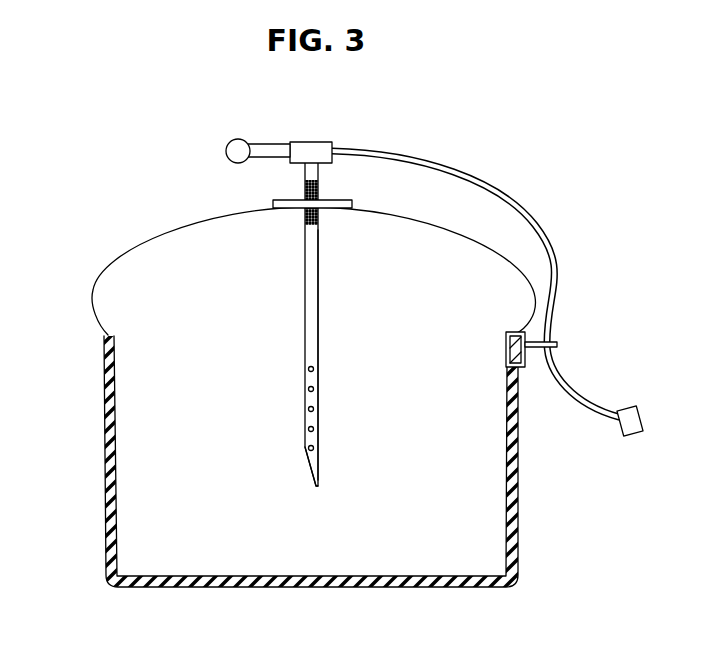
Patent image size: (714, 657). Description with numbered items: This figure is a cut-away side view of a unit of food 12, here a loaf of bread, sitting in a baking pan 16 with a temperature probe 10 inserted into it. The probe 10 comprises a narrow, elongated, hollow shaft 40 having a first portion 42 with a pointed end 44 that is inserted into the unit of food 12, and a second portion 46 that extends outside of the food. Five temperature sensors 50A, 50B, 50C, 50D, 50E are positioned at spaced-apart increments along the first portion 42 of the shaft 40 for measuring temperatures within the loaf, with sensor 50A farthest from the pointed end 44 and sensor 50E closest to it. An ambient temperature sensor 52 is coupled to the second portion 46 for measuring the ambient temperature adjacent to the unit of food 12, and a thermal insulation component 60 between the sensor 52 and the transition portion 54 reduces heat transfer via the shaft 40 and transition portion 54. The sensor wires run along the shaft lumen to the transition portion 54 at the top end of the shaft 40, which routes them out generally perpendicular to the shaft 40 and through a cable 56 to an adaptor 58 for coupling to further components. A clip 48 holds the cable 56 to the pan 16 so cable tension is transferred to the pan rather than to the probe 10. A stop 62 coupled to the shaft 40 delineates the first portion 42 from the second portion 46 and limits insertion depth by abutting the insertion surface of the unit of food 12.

The temperature probe 10 is at (247, 108).
The unit of food 12 is at (103, 270).
The baking pan 16 is at (102, 390).
The shaft 40 is at (313, 284).
The first portion 42 is at (320, 356).
The pointed end 44 is at (317, 487).
The second portion 46 is at (313, 172).
The clip 48 is at (525, 359).
The temperature sensor 50A is at (314, 369).
The temperature sensor 50B is at (314, 389).
The temperature sensor 50C is at (314, 409).
The temperature sensor 50D is at (314, 429).
The temperature sensor 50E is at (314, 448).
The ambient temperature sensor 52 is at (231, 145).
The transition portion 54 is at (313, 143).
The cable 56 is at (462, 170).
The adaptor 58 is at (634, 406).
The thermal insulation component 60 is at (261, 143).
The stop 62 is at (352, 202).